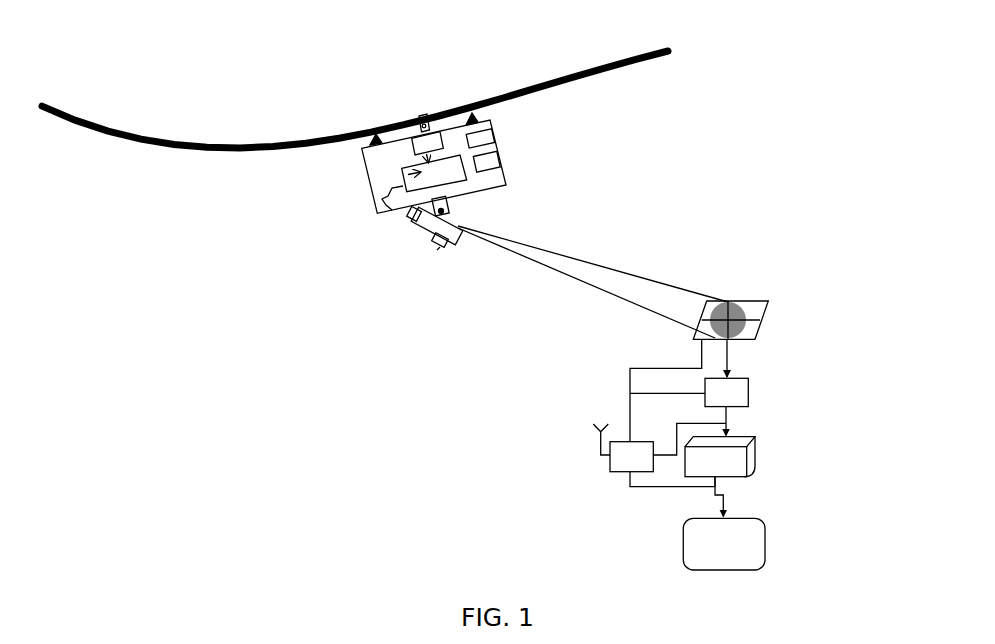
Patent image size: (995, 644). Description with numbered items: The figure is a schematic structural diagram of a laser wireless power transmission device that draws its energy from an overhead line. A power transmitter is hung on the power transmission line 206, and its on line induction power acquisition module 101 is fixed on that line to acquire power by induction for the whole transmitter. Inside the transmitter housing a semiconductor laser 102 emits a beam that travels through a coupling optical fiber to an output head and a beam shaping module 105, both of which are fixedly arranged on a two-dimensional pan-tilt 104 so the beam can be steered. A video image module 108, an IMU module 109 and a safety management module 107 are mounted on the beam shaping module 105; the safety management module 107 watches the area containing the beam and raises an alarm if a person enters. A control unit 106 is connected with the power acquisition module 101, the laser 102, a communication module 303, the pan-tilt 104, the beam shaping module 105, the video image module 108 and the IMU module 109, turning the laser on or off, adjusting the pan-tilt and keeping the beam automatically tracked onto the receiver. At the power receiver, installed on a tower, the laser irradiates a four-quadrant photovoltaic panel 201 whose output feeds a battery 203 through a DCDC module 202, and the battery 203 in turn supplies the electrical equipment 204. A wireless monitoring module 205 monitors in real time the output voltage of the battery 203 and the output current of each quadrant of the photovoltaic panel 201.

The on line induction power acquisition module 101 is at (417, 117).
The semiconductor laser 102 is at (402, 173).
The sensor module 303 is at (491, 137).
The control unit 106 is at (498, 160).
The two-dimensional pan-tilt 104 is at (456, 206).
The beam shaping module 105 is at (420, 230).
The video image module 108 is at (468, 222).
The IMU module 109 is at (435, 240).
The safety management module 107 is at (440, 248).
The power transmission line 206 is at (549, 79).
The four-quadrant photovoltaic panel 201 is at (737, 288).
The DCDC module 202 is at (753, 392).
The battery 203 is at (758, 450).
The electrical equipment 204 is at (767, 545).
The wireless monitoring module 205 is at (597, 468).